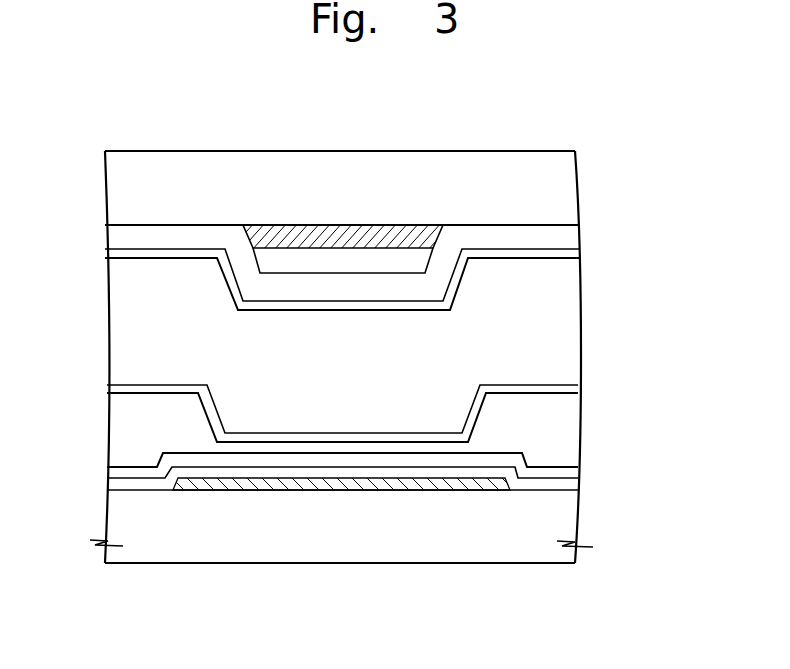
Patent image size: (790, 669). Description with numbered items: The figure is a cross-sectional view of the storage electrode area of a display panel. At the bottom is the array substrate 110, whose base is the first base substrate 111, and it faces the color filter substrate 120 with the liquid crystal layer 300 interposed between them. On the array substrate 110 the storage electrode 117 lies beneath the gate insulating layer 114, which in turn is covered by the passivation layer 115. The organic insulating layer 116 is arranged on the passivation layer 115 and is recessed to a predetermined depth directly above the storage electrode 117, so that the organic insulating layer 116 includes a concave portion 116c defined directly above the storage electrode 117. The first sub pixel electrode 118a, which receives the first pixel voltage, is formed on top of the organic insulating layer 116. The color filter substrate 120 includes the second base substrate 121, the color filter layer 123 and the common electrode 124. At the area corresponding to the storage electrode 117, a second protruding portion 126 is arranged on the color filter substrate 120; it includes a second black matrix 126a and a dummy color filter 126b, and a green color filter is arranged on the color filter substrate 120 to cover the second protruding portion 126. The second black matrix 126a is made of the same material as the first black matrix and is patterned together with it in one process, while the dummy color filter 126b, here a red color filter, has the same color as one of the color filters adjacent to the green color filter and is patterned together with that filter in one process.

The array substrate 110 is at (672, 380).
The first substrate 111 is at (570, 517).
The gate insulating layer 114 is at (570, 487).
The passivation layer 115 is at (570, 470).
The organic insulating layer 116 is at (570, 422).
The concave portion 116c is at (350, 413).
The storage electrode 117 is at (337, 487).
The first sub pixel electrode 118a is at (570, 385).
The color filter substrate 120 is at (662, 180).
The second base substrate 121 is at (570, 185).
The color filter layer 123 is at (570, 237).
The common electrode 124 is at (570, 257).
The second protruding portion 126 is at (347, 183).
The second black matrix 126a is at (320, 223).
The dummy color filter 126b is at (377, 257).
The liquid crystal layer 300 is at (570, 323).